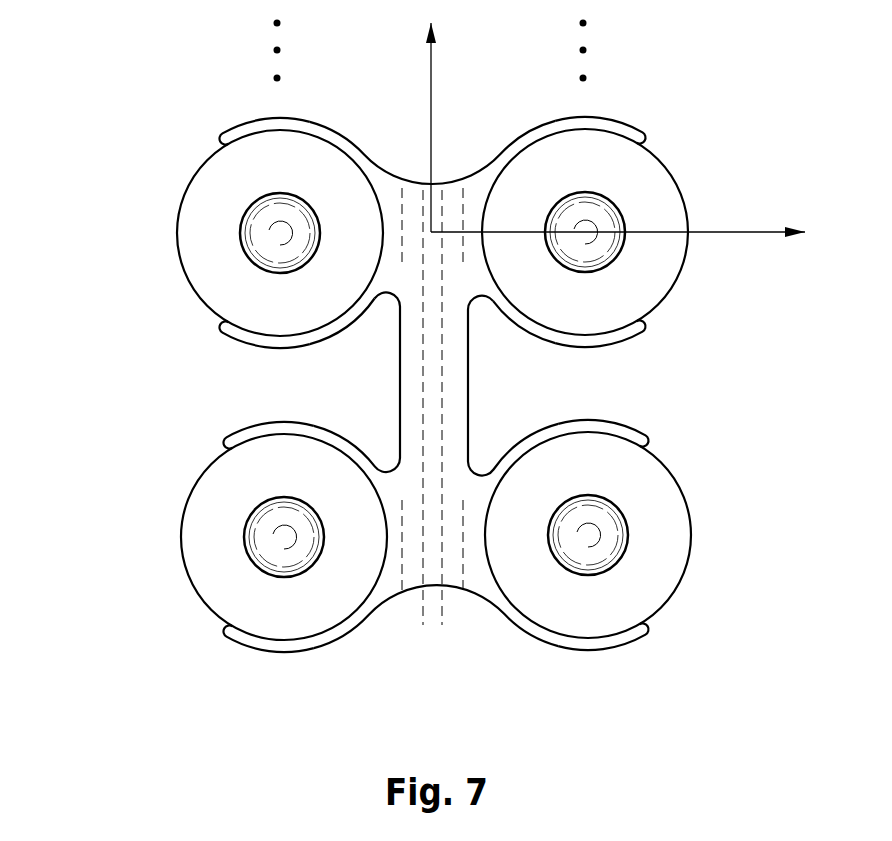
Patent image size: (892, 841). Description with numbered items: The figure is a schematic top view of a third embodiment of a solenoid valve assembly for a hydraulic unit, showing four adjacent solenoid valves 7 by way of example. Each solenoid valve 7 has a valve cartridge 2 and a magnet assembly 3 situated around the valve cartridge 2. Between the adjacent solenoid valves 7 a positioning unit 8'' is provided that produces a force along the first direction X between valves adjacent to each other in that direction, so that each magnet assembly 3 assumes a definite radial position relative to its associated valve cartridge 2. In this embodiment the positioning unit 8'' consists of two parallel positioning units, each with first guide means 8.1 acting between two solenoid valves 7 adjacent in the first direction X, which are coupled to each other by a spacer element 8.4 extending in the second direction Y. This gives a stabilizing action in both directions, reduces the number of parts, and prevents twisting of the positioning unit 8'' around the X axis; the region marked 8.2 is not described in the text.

The solenoid valve 7 is at (456, 379).
The positioning unit 8'' is at (433, 380).
The first guide means 8.1 is at (245, 128).
The recess 8.2 is at (430, 184).
The spacer element 8.4 is at (412, 383).
The magnet assembly 3 is at (198, 213).
The valve cartridge 2 is at (267, 245).